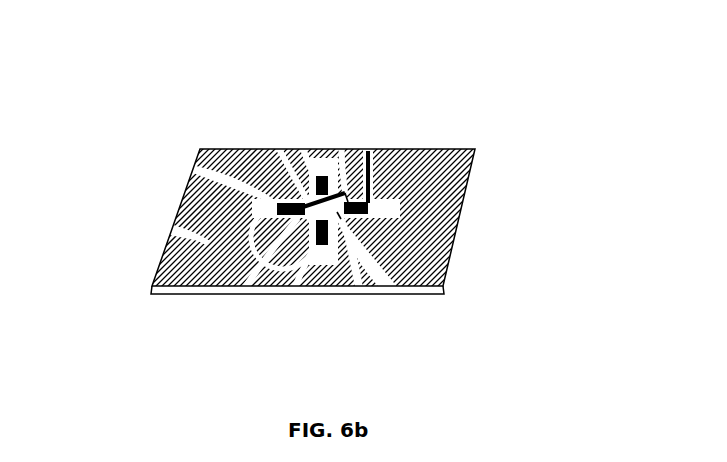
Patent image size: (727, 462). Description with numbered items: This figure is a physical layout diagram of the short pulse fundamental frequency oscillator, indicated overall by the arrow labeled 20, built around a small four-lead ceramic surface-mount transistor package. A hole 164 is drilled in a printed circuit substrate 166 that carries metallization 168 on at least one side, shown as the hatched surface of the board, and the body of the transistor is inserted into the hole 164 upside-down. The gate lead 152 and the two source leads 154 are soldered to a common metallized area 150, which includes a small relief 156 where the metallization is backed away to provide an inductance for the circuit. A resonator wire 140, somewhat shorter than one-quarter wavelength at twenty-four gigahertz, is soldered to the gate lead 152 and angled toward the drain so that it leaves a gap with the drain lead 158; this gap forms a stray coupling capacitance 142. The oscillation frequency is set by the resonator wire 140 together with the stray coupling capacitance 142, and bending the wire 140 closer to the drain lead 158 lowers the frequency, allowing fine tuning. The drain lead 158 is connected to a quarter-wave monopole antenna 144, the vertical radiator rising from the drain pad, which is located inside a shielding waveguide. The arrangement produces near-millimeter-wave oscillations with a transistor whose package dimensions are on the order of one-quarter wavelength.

The sensor device 20 is at (521, 89).
The resonator wire 140 is at (307, 200).
The stray coupling capacitance 142 is at (345, 193).
The quarter-wave monopole antenna 144 is at (368, 152).
The common metallized area 150 is at (285, 190).
The gate lead 152 is at (277, 205).
The source leads 154 is at (315, 177).
The relief 156 is at (298, 218).
The drain lead 158 is at (338, 215).
The hole 164 is at (340, 215).
The printed circuit substrate 166 is at (165, 293).
The metallization 168 is at (208, 243).